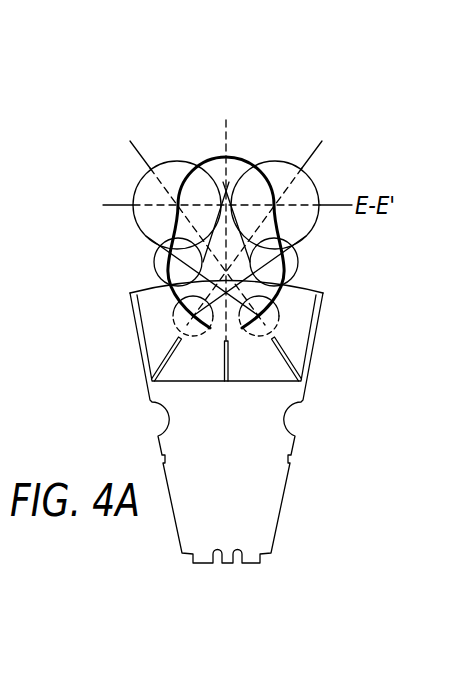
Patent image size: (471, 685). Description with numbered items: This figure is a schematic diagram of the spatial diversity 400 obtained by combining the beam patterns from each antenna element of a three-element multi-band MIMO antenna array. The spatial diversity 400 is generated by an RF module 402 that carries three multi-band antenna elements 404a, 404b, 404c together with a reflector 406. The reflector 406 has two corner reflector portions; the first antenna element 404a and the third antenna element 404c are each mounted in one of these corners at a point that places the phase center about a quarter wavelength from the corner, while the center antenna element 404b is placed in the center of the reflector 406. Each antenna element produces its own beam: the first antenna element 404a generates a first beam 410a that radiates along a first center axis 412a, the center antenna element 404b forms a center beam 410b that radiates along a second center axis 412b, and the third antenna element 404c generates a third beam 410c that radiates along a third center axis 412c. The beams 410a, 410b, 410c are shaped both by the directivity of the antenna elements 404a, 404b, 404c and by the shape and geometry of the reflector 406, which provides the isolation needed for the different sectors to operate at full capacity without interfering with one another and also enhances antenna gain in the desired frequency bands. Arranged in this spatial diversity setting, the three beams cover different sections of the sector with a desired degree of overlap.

The spatial diversity 400 is at (274, 80).
The RF module 402 is at (245, 477).
The first multi-band antenna element 404a is at (168, 352).
The center multi-band antenna element 404b is at (225, 358).
The third multi-band antenna element 404c is at (283, 352).
The reflector 406 is at (267, 381).
The first beam 410a is at (313, 183).
The center beam 410b is at (232, 156).
The third beam 410c is at (148, 245).
The first center axis 412a is at (318, 142).
The second center axis 412b is at (226, 148).
The third center axis 412c is at (148, 165).